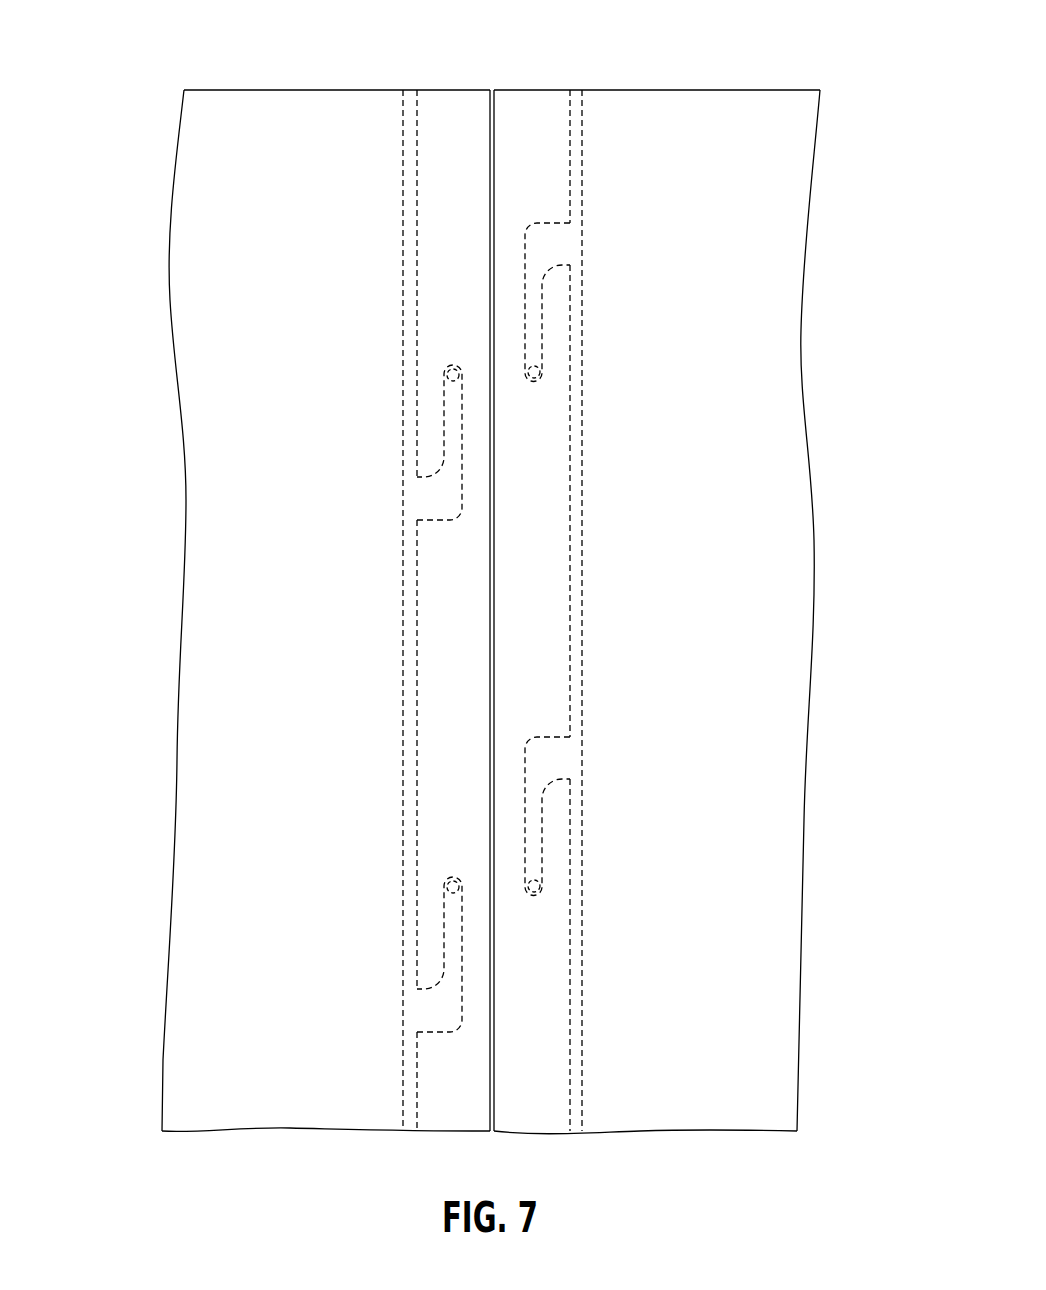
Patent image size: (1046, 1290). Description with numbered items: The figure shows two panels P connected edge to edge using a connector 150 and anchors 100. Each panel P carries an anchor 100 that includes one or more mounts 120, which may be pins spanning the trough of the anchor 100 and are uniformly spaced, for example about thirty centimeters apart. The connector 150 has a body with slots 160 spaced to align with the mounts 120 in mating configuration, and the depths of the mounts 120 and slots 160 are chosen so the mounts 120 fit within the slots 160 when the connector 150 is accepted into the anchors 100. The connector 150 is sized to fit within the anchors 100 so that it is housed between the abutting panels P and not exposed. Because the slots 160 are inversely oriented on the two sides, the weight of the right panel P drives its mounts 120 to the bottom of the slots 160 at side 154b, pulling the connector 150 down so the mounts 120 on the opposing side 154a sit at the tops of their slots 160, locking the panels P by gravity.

The anchor 100 is at (455, 80).
The panel P is at (283, 90).
The mount 120 is at (539, 369).
The connector 150 is at (447, 1110).
The opposing side of the connector 154a is at (418, 800).
The side of the connector 154b is at (572, 704).
The slot 160 is at (578, 244).